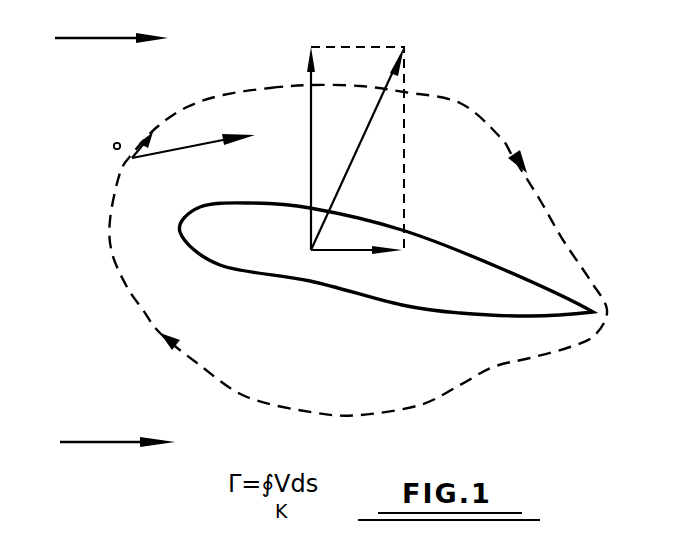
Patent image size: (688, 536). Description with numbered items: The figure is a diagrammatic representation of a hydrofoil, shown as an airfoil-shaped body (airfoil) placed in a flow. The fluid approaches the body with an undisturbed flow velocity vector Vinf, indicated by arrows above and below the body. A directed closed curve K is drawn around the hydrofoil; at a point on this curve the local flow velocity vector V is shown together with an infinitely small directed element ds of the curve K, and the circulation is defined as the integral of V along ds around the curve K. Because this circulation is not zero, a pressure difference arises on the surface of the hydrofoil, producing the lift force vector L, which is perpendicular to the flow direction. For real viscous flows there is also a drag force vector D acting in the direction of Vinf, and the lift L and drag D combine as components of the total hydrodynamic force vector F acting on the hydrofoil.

The undisturbed flow velocity vector Vinf is at (115, 229).
The directed closed curve K is at (358, 250).
The hydrofoil airfoil is at (386, 259).
The lift force vector L is at (304, 136).
The hydrodynamic force vector F is at (363, 136).
The drag force vector D is at (364, 263).
The local flow velocity vector V is at (193, 134).
The infinitely small directed element of curve K ds is at (133, 137).